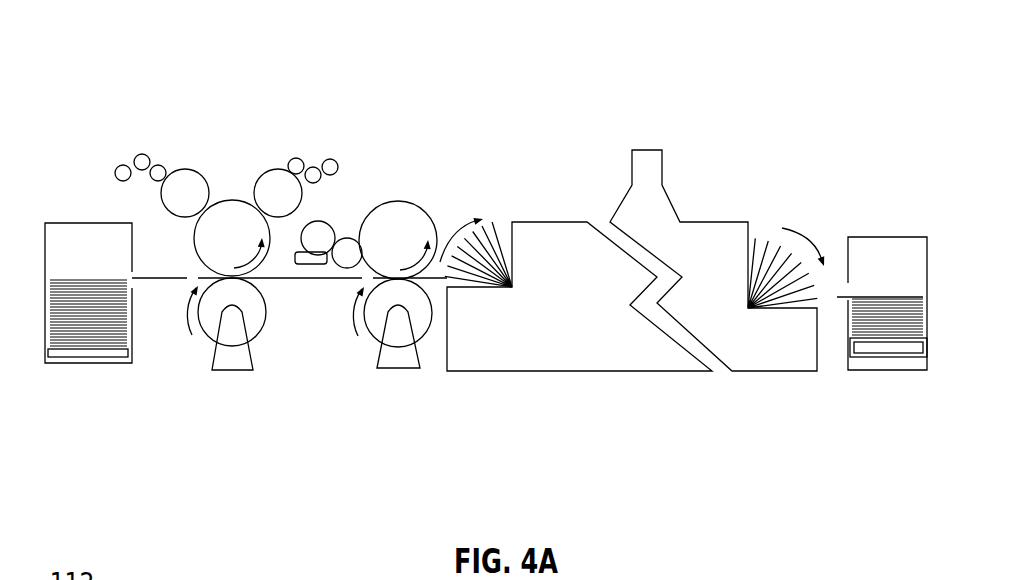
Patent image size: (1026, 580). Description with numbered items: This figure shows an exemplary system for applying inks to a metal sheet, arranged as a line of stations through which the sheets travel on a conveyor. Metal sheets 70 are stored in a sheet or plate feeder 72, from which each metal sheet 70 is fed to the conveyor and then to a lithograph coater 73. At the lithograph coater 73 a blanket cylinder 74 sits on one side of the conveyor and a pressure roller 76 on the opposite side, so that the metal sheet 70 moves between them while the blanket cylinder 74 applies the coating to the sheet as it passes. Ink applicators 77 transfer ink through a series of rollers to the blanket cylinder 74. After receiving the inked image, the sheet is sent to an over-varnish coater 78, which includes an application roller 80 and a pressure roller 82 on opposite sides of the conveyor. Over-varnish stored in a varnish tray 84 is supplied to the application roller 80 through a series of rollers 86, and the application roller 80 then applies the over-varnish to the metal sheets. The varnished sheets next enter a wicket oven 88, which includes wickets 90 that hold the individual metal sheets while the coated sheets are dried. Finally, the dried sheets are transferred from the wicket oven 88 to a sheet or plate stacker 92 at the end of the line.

The metal sheet 70 is at (177, 281).
The sheet or plate feeder 72 is at (88, 364).
The lithograph coater 73 is at (230, 372).
The blanket cylinder 74 is at (185, 237).
The pressure roller 76 is at (251, 323).
The ink applicators 77 is at (143, 134).
The over-varnish coater 78 is at (402, 369).
The application roller 80 is at (397, 221).
The pressure roller 82 is at (365, 366).
The varnish tray 84 is at (296, 233).
The series of rollers 86 is at (344, 210).
The wicket oven 88 is at (617, 372).
The wickets 90 is at (595, 189).
The sheet or plate stacker 92 is at (888, 372).